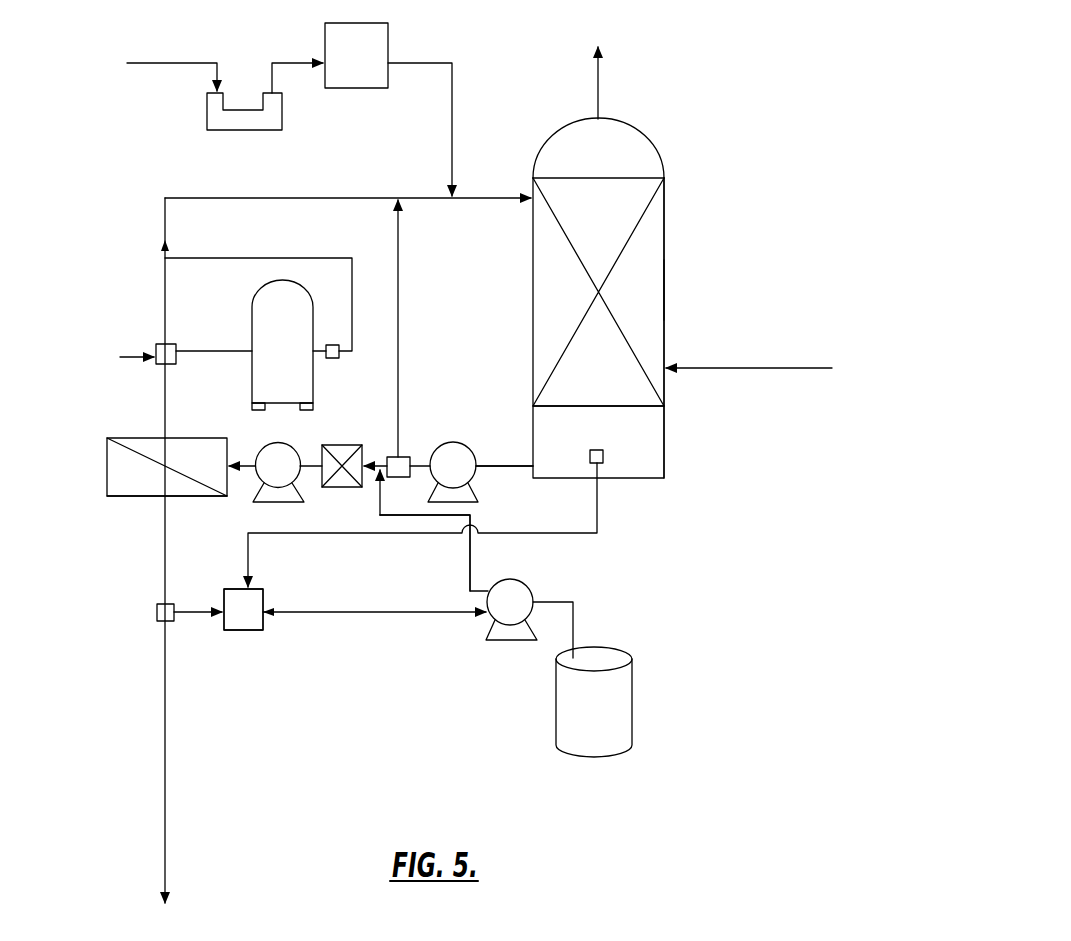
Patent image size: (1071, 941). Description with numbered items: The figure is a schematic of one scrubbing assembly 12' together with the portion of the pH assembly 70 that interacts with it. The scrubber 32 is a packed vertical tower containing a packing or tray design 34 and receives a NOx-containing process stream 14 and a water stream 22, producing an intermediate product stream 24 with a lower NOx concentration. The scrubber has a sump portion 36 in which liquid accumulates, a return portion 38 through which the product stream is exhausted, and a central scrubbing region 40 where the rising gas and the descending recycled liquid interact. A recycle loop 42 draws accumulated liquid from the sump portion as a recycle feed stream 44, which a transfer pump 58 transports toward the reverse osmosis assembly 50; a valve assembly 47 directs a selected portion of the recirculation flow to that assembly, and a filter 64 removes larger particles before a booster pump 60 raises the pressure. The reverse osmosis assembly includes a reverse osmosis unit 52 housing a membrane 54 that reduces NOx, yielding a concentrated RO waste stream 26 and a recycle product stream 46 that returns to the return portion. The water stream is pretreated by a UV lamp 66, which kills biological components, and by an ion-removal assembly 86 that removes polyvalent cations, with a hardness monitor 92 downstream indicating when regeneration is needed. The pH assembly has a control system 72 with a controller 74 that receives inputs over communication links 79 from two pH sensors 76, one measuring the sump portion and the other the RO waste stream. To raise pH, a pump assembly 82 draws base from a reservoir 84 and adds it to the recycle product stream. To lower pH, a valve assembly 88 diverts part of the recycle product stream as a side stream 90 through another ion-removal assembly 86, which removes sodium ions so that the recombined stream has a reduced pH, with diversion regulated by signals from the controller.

The scrubbing assembly 12' is at (631, 281).
The process stream 14 is at (738, 368).
The water stream 22 is at (162, 63).
The intermediate product stream 24 is at (598, 88).
The RO waste stream 26 is at (166, 727).
The scrubber unit 32 is at (671, 237).
The packing or tray design 34 is at (668, 288).
The sump portion 36 is at (612, 440).
The return portion 38 is at (612, 176).
The central scrubbing region 40 is at (612, 348).
The recycle loop 42 is at (514, 460).
The recycle feed stream 44 is at (493, 468).
The recycle product stream 46 is at (493, 198).
The valve assembly 47 is at (410, 458).
The reverse osmosis assembly 50 is at (94, 436).
The reverse osmosis unit 52 is at (107, 467).
The membrane 54 is at (107, 484).
The transfer pump 58 is at (467, 478).
The booster pump 60 is at (292, 478).
The filter 64 is at (332, 490).
The UV lamp 66 is at (248, 131).
The pH assembly 70 is at (463, 664).
The control system 72 is at (267, 628).
The controller 74 is at (262, 592).
The pH sensor 76 is at (605, 455).
The communication link 79 is at (196, 614).
The pump assembly 82 is at (524, 615).
The reservoir 84 is at (608, 726).
The ion-removal assembly 86 is at (370, 66).
The valve assembly 88 is at (123, 356).
The side stream 90 is at (200, 352).
The hardness monitor 92 is at (331, 358).